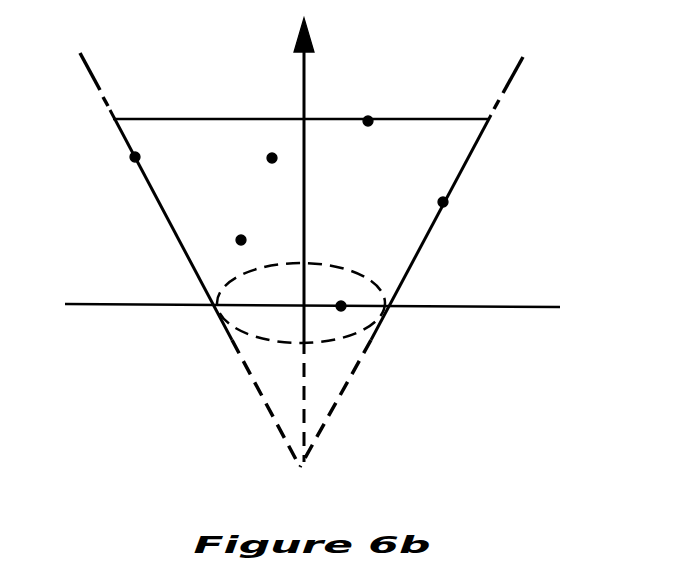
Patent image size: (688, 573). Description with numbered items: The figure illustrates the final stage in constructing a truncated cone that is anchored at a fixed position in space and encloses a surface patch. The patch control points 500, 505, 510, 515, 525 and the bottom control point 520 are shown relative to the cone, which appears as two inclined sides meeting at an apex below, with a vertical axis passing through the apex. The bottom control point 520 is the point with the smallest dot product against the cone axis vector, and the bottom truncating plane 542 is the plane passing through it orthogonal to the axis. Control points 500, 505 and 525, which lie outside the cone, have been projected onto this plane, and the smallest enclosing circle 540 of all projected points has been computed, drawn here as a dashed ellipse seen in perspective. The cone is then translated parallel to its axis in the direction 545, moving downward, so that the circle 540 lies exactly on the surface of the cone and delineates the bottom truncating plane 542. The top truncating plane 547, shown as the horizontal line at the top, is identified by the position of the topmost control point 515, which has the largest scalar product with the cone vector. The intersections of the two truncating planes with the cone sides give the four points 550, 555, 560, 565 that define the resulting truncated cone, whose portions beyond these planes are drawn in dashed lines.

The control point 500 is at (139, 225).
The control point 505 is at (221, 213).
The control point 510 is at (225, 147).
The topmost control point 515 is at (355, 146).
The bottom control point 520 is at (341, 306).
The control point 525 is at (449, 227).
The smallest enclosing circle 540 is at (278, 347).
The bottom truncating plane 542 is at (353, 320).
The cone translation direction 545 is at (338, 240).
The top truncating plane 547 is at (301, 90).
The truncated cone defining point 550 is at (220, 402).
The truncated cone defining point 555 is at (63, 95).
The truncated cone defining point 560 is at (524, 101).
The truncated cone defining point 565 is at (413, 329).